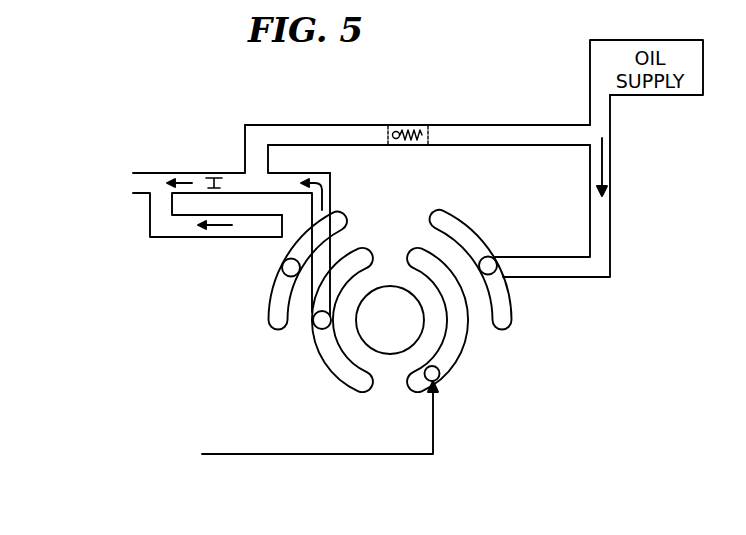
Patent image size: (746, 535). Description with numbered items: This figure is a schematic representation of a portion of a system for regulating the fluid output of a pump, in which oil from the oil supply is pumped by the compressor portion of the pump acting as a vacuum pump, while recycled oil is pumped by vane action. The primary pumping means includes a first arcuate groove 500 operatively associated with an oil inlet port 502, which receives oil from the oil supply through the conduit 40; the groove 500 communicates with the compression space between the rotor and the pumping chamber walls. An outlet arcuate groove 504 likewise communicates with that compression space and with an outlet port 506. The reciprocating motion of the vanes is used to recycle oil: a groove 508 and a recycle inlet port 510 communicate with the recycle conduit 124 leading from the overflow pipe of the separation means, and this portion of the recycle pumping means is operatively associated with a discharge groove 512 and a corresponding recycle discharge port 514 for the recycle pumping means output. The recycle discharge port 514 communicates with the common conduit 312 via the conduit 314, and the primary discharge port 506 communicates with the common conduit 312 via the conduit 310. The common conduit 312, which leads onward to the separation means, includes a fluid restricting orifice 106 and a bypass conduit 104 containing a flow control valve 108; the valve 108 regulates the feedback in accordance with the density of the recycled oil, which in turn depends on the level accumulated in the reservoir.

The conduit 40 is at (613, 202).
The bypass conduit 104 is at (327, 124).
The fluid restricting orifice 106 is at (212, 178).
The flow control valve 108 is at (416, 125).
The recycle conduit 124 is at (380, 455).
The conduit 310 is at (282, 240).
The common conduit 312 is at (254, 196).
The conduit 314 is at (331, 174).
The first arcuate groove 500 is at (510, 318).
The oil inlet port 502 is at (488, 264).
The outlet arcuate groove 504 is at (280, 331).
The outlet port 506 is at (284, 268).
The groove 508 is at (466, 345).
The recycle inlet port 510 is at (426, 394).
The discharge groove 512 is at (365, 391).
The recycle discharge port 514 is at (331, 320).